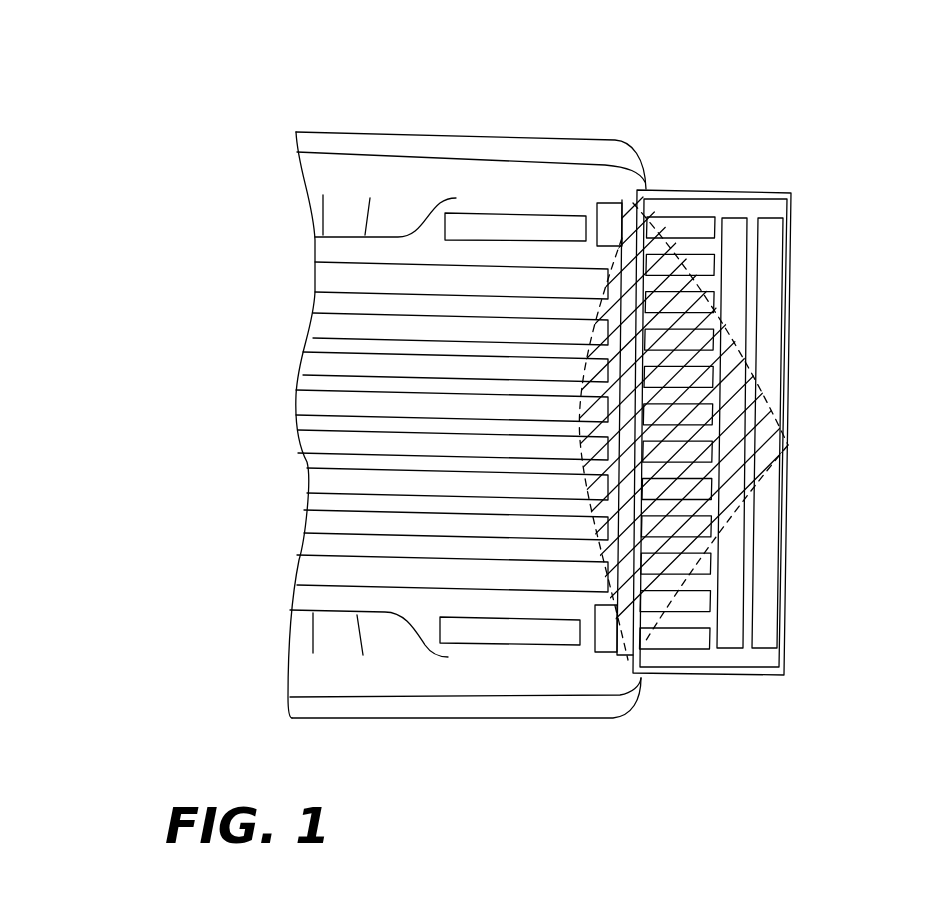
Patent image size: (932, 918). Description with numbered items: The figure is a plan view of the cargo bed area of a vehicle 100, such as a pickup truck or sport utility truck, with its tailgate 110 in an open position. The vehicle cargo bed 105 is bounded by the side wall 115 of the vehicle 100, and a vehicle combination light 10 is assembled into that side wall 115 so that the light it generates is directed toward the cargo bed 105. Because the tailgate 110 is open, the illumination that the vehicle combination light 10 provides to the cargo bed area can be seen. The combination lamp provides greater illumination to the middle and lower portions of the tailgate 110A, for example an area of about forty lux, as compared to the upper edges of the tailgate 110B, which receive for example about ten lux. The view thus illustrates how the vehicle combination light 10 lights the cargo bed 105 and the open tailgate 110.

The vehicle combination light 10 is at (645, 150).
The vehicle 100 is at (618, 738).
The vehicle cargo bed 105 is at (313, 482).
The tailgate 110 is at (768, 563).
The middle and lower portions of the tailgate 110A is at (728, 348).
The upper edges of the tailgate 110B is at (775, 292).
The side wall 115 is at (524, 150).